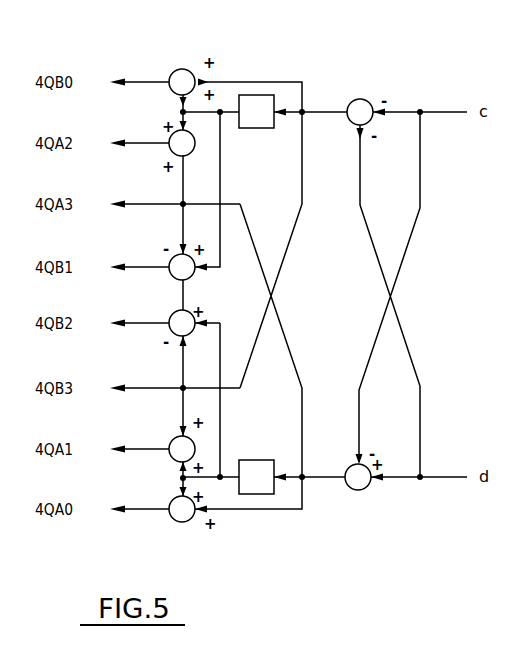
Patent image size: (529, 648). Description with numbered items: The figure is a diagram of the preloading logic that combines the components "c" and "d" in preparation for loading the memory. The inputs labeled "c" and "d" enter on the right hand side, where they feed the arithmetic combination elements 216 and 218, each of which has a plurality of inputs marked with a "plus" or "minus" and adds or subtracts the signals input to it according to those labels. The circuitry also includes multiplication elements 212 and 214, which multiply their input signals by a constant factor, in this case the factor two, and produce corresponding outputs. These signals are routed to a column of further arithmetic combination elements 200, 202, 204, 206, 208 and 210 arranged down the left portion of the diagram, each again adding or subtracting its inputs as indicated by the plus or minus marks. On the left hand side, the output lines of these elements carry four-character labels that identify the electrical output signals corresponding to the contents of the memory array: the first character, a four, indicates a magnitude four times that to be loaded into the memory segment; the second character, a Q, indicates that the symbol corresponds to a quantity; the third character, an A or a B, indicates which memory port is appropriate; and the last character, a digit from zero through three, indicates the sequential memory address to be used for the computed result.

The arithmetic combination element 200 is at (187, 74).
The arithmetic combination element 202 is at (176, 148).
The arithmetic combination element 204 is at (174, 262).
The arithmetic combination element 206 is at (177, 314).
The arithmetic combination element 208 is at (174, 441).
The arithmetic combination element 210 is at (174, 519).
The multiplication element 212 is at (268, 131).
The multiplication element 214 is at (262, 462).
The arithmetic combination element 216 is at (366, 108).
The arithmetic combination element 218 is at (361, 486).